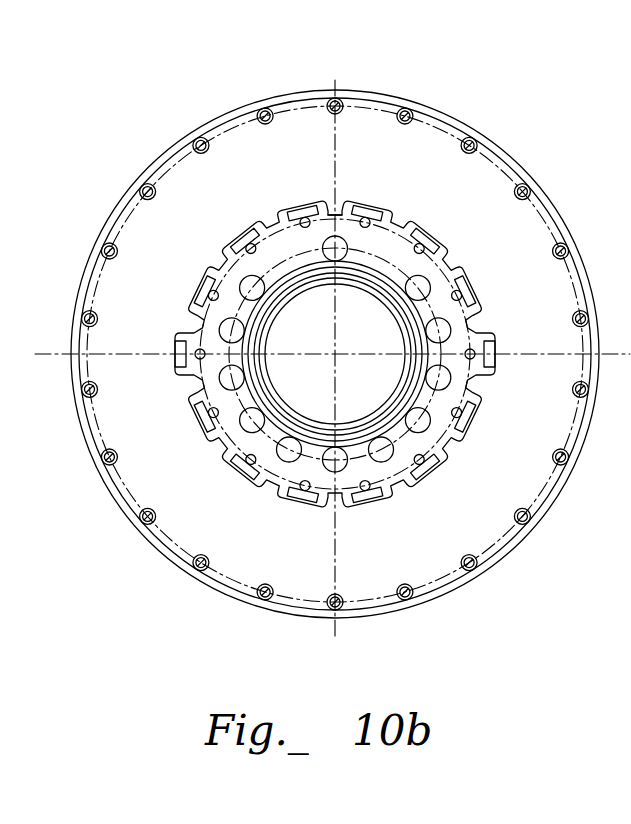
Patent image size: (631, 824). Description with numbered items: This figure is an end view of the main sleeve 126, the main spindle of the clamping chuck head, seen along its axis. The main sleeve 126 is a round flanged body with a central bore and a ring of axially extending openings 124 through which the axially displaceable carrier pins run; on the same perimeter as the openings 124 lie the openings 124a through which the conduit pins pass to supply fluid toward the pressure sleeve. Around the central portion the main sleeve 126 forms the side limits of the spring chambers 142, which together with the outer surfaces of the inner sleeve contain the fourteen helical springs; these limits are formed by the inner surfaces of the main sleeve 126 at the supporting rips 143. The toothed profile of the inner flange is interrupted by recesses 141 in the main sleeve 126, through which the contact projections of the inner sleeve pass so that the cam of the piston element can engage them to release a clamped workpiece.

The main sleeve 126 is at (147, 147).
The recesses 141 is at (300, 206).
The spring chambers 142 is at (393, 206).
The supporting rips 143 is at (341, 212).
The axially extending openings 124 is at (418, 392).
The openings 124a is at (258, 305).